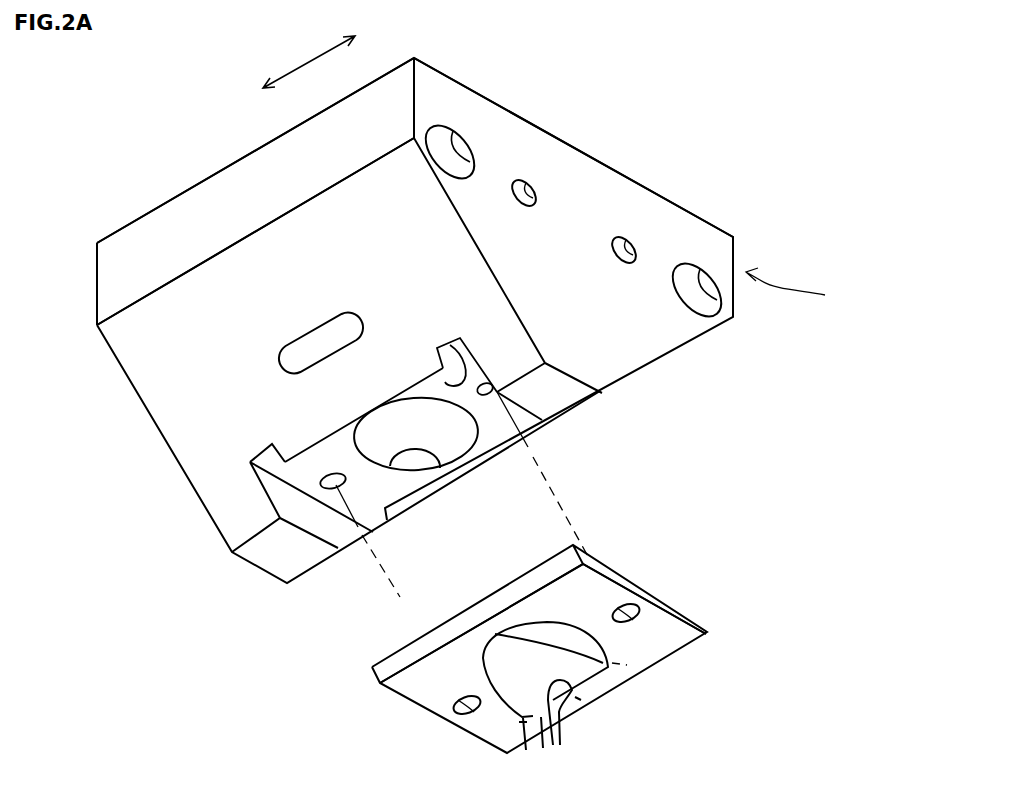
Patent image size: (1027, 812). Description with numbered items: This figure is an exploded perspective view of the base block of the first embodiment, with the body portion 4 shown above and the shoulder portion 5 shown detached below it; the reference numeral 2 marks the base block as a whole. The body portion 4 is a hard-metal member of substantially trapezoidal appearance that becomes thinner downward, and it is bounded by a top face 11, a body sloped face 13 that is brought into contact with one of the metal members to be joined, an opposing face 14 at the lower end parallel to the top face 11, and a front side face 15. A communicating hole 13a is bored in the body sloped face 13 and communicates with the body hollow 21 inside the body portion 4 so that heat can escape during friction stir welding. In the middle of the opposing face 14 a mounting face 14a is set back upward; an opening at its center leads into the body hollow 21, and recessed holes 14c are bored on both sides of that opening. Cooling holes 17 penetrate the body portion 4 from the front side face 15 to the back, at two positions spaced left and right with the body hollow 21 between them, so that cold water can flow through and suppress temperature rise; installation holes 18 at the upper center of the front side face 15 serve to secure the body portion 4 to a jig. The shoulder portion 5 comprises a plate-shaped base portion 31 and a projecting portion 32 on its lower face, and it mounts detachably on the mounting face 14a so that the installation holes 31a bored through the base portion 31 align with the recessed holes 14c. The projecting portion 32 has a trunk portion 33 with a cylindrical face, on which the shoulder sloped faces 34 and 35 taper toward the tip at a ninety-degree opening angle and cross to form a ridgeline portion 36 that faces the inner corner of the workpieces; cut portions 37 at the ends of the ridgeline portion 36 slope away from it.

The holder 2 is at (644, 124).
The body portion 4 is at (795, 287).
The shoulder portion 5 is at (724, 626).
The top face 11 is at (262, 168).
The body sloped face 13 is at (158, 368).
The communicating hole 13a is at (300, 352).
The opposing face 14 is at (268, 548).
The mounting face 14a is at (453, 340).
The recessed hole 14c is at (333, 482).
The front side face 15 is at (438, 97).
The cooling hole 17 is at (453, 134).
The installation hole 18 is at (513, 186).
The body hollow 21 is at (440, 468).
The base portion 31 is at (642, 590).
The installation hole 31a is at (465, 706).
The projecting portion 32 is at (594, 716).
The trunk portion 33 is at (565, 632).
The shoulder sloped face 34 is at (522, 655).
The shoulder sloped face 35 is at (612, 663).
The ridgeline portion 36 is at (590, 678).
The cut portion 37 is at (528, 720).